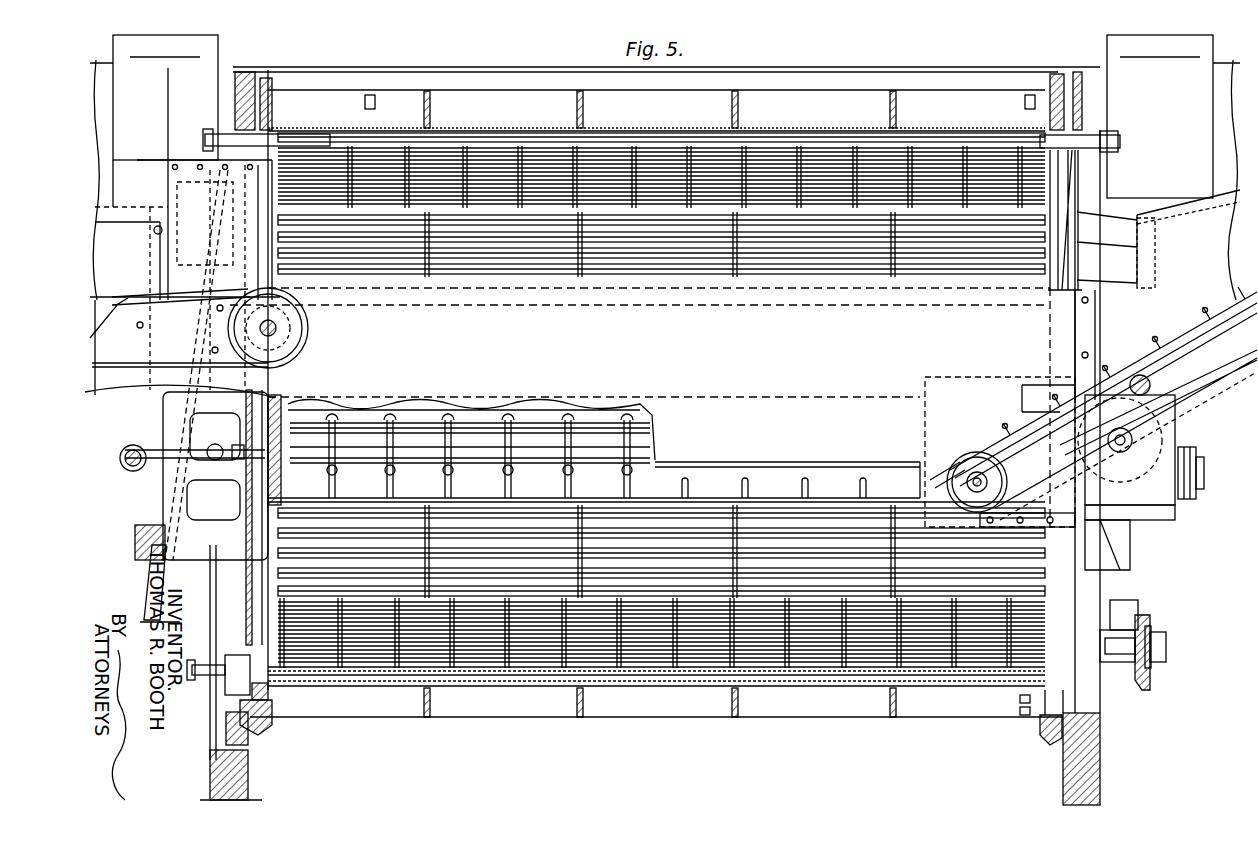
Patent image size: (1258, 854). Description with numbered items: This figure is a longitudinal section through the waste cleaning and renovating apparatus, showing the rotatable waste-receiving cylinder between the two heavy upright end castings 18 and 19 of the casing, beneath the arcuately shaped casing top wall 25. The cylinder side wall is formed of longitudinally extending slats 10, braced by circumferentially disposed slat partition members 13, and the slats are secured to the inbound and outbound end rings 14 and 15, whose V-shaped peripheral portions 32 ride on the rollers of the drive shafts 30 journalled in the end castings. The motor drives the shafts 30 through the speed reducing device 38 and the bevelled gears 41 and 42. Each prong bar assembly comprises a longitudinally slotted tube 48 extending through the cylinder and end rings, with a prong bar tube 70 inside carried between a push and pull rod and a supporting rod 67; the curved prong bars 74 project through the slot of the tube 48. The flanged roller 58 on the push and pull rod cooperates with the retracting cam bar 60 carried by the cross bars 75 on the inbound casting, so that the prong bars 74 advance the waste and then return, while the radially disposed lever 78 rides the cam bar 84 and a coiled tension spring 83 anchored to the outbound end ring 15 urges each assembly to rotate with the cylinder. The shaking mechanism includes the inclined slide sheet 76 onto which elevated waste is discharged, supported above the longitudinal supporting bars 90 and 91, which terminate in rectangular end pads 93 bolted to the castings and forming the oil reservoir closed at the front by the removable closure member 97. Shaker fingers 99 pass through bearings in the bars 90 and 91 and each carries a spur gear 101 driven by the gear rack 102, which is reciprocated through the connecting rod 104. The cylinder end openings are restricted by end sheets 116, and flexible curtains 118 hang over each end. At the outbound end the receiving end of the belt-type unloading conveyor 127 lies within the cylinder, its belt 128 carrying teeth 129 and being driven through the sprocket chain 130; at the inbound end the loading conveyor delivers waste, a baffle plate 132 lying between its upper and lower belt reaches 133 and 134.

The slats 10 is at (921, 98).
The slat partition members 13 is at (446, 102).
The inbound end ring 14 is at (268, 697).
The outbound end ring 15 is at (1030, 703).
The inbound end casting 18 is at (250, 775).
The outbound end casting 19 is at (1097, 772).
The casing top wall 25 is at (834, 67).
The drive shafts 30 is at (1105, 665).
The V-shaped peripheral portions 32 is at (270, 726).
The speed reducing device 38 is at (1170, 440).
The bevelled gear 41 is at (1148, 622).
The bevelled gear 42 is at (1162, 632).
The longitudinally slotted tube 48 is at (708, 686).
The flanged wheel or roller 58 is at (215, 128).
The retracting cam bar 60 is at (146, 600).
The supporting rod 67 is at (1120, 143).
The prong bar tube 70 is at (596, 140).
The prong bars 74 is at (832, 687).
The cross bars 75 is at (135, 530).
The inclined slide sheet 76 is at (662, 407).
The radially disposed lever 78 is at (232, 660).
The coiled tension spring 83 is at (1068, 196).
The cam bar 84 is at (248, 742).
The supporting bar 90 is at (546, 474).
The supporting bar 91 is at (640, 440).
The end pads 93 is at (284, 410).
The front closure member 97 is at (672, 477).
The shaker fingers 99 is at (445, 480).
The spur gear 101 is at (392, 416).
The gear rack 102 is at (360, 422).
The connecting rod 104 is at (158, 463).
The end sheets 116 is at (246, 605).
The flexible curtains 118 is at (100, 103).
The unloading conveyor 127 is at (1214, 412).
The conveyor belt 128 is at (1170, 396).
The teeth 129 is at (1117, 362).
The sprocket chain 130 is at (1027, 412).
The baffle plate 132 is at (118, 303).
The upper belt reach 133 is at (108, 300).
The lower belt reach 134 is at (134, 366).